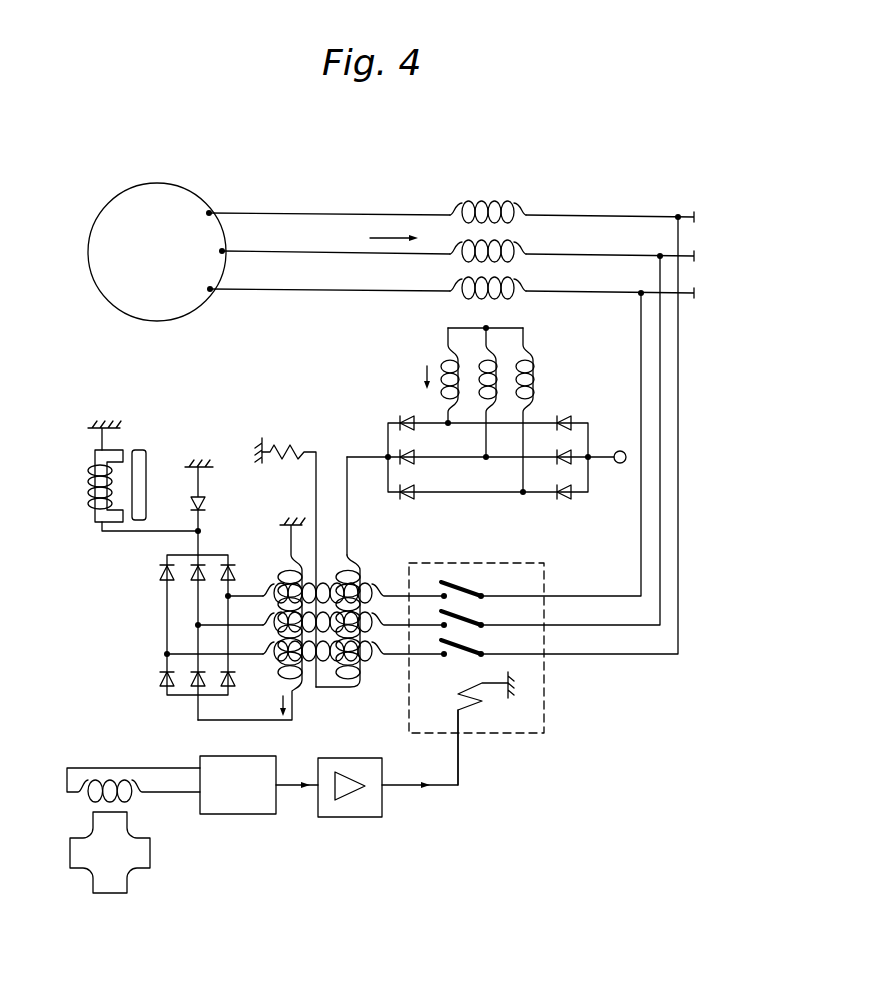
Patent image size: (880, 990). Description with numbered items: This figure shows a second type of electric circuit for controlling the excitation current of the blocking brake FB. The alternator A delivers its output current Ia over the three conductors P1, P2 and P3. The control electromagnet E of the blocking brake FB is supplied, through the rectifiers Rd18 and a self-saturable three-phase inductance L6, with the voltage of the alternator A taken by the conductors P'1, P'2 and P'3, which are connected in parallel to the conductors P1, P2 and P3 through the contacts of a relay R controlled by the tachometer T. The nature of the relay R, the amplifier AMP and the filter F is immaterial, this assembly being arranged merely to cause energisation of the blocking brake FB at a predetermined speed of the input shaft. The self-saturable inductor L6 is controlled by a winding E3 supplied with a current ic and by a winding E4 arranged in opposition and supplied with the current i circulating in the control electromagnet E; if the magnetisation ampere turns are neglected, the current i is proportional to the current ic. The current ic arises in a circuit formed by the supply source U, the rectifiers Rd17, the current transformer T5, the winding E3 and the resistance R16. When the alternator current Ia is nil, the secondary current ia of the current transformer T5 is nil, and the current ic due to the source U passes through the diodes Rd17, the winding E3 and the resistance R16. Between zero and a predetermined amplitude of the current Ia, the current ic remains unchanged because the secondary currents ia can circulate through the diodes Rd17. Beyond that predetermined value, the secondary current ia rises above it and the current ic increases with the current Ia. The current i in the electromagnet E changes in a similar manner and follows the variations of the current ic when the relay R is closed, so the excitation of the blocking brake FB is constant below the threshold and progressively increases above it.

The alternator A is at (149, 186).
The conductor P1 is at (268, 214).
The conductor P2 is at (268, 252).
The conductor P3 is at (268, 290).
The alternator output current Ia is at (391, 229).
The current transformer T5 is at (524, 294).
The secondary current ia is at (413, 376).
The rectifiers Rd17 is at (550, 459).
The supply voltage source U is at (613, 445).
The control electromagnet E is at (88, 481).
The blocking brake FB is at (140, 444).
The resistance R16 is at (290, 447).
The control current ic is at (354, 534).
The self-saturable three-phase inductance L6 is at (262, 652).
The rectifiers Rd18 is at (163, 668).
The winding E4 is at (298, 690).
The winding E3 is at (356, 690).
The electromagnet current i is at (273, 704).
The conductor P'3 is at (541, 446).
The conductor P'2 is at (550, 442).
The conductor P'1 is at (559, 437).
The relay R is at (470, 708).
The tachometer T is at (111, 889).
The filter F is at (241, 803).
The amplifier AMP is at (351, 807).